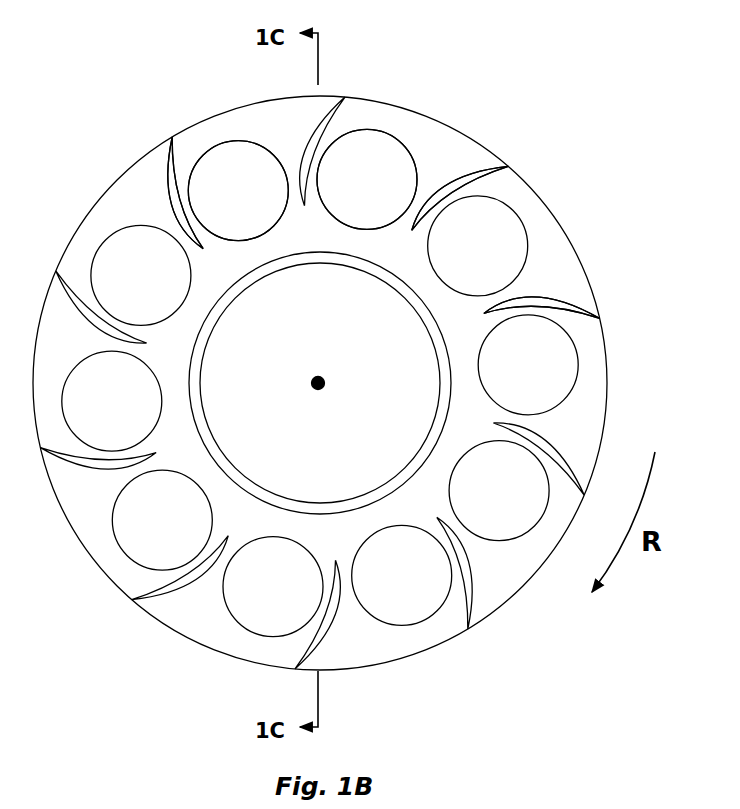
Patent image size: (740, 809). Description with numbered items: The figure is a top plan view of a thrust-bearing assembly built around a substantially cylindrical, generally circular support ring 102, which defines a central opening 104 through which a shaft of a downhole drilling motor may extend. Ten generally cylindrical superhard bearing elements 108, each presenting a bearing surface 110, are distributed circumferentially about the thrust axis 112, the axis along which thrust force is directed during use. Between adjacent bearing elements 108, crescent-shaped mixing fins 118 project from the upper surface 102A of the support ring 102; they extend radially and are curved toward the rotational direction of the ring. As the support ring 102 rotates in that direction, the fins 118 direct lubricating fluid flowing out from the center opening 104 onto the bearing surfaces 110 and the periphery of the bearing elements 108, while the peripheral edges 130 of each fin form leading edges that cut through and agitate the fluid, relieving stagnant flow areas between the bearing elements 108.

The support ring 102 is at (582, 260).
The upper surface of the support ring 102A is at (545, 232).
The opening 104 is at (295, 435).
The superhard bearing elements 108 is at (237, 140).
The bearing surfaces 110 is at (215, 168).
The thrust axis 112 is at (313, 383).
The mixing fins 118 is at (160, 175).
The peripheral edges 130 is at (178, 198).